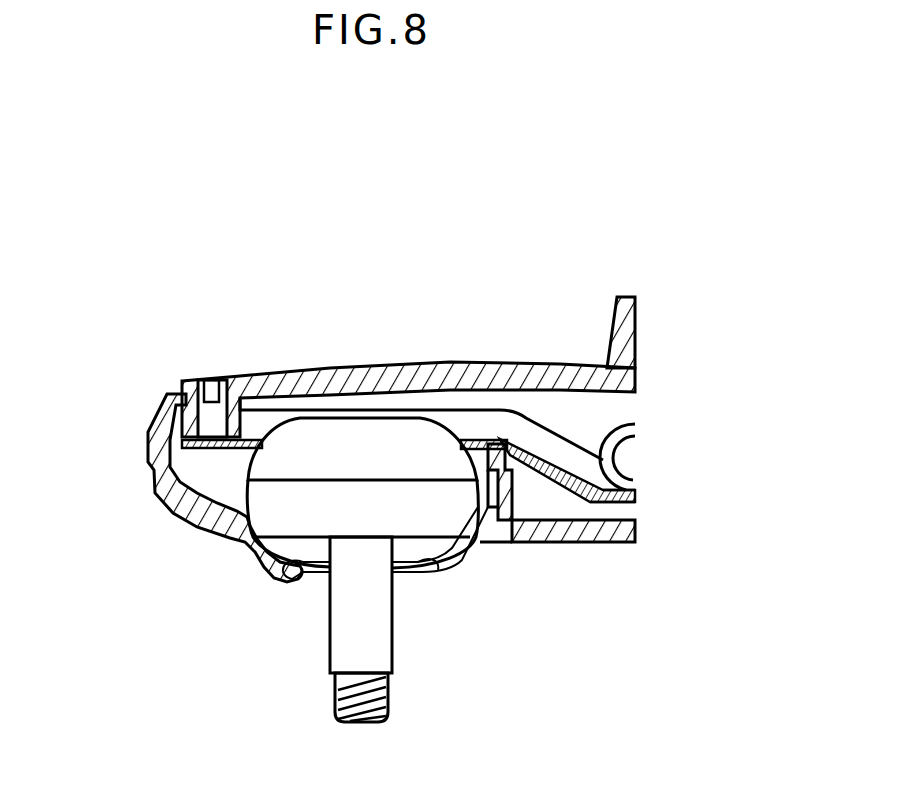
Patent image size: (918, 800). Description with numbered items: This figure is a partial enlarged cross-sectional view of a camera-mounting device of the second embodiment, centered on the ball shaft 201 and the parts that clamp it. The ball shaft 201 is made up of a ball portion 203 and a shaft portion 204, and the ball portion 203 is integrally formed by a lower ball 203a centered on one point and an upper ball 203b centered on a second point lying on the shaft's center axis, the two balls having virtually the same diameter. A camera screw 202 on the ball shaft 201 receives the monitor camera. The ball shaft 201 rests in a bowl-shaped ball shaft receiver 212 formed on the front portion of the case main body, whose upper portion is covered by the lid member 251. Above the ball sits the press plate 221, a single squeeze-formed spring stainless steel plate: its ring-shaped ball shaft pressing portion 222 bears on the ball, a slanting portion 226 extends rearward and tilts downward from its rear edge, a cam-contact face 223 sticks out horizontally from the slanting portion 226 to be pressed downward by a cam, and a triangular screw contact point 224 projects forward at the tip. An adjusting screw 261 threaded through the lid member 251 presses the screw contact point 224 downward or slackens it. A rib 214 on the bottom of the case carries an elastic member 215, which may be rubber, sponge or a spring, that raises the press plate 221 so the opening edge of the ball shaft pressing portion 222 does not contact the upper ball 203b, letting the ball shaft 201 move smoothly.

The ball shaft 201 is at (383, 629).
The camera screw 202 is at (370, 693).
The ball portion 203 is at (245, 544).
The lower ball 203a is at (287, 513).
The upper ball 203b is at (300, 457).
The shaft portion 204 is at (340, 638).
The ball shaft receiver 212 is at (297, 573).
The rib 214 is at (518, 490).
The elastic member 215 is at (502, 449).
The press plate 221 is at (505, 446).
The ball shaft pressing portion 222 is at (473, 444).
The cam-contact face 223 is at (615, 500).
The screw contact point 224 is at (207, 450).
The slanting portion 226 is at (543, 467).
The lid member 251 is at (360, 372).
The adjusting screw 261 is at (212, 388).